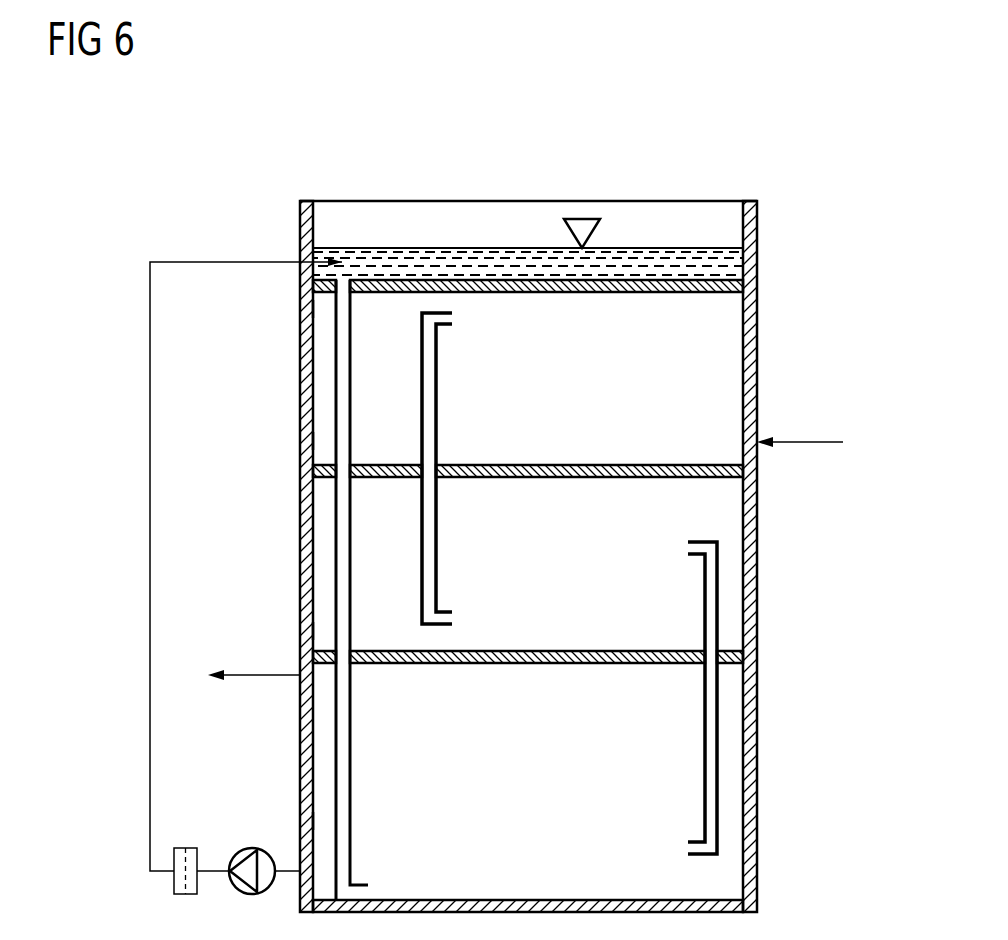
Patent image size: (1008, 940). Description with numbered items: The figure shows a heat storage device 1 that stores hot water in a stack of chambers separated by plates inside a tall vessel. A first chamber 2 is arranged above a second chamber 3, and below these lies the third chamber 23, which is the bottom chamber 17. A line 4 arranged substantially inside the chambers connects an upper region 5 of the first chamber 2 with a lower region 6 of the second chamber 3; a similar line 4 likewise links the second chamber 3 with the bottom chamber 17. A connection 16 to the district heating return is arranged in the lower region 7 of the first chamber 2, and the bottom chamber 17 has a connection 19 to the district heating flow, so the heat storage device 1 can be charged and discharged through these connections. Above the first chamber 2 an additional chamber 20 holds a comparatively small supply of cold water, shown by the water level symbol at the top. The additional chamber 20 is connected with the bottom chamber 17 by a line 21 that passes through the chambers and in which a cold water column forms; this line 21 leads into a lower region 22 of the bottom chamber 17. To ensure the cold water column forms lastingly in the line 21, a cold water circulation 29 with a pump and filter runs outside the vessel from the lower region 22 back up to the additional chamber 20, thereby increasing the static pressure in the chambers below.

The heat storage device 1 is at (256, 120).
The first chamber 2 is at (724, 327).
The second chamber 3 is at (724, 510).
The line 4 is at (436, 404).
The upper region of the first chamber 5 is at (323, 310).
The lower region of the second chamber 6 is at (323, 632).
The lower region of the first chamber 7 is at (325, 442).
The connection to the district heating return 16 is at (800, 442).
The bottom chamber 17 is at (593, 771).
The connection to the district heating flow 19 is at (253, 676).
The additional chamber 20 is at (724, 226).
The line 21 is at (352, 782).
The lower region of the bottom chamber 22 is at (323, 822).
The third chamber 23 is at (724, 873).
The cold water circulation 29 is at (150, 713).